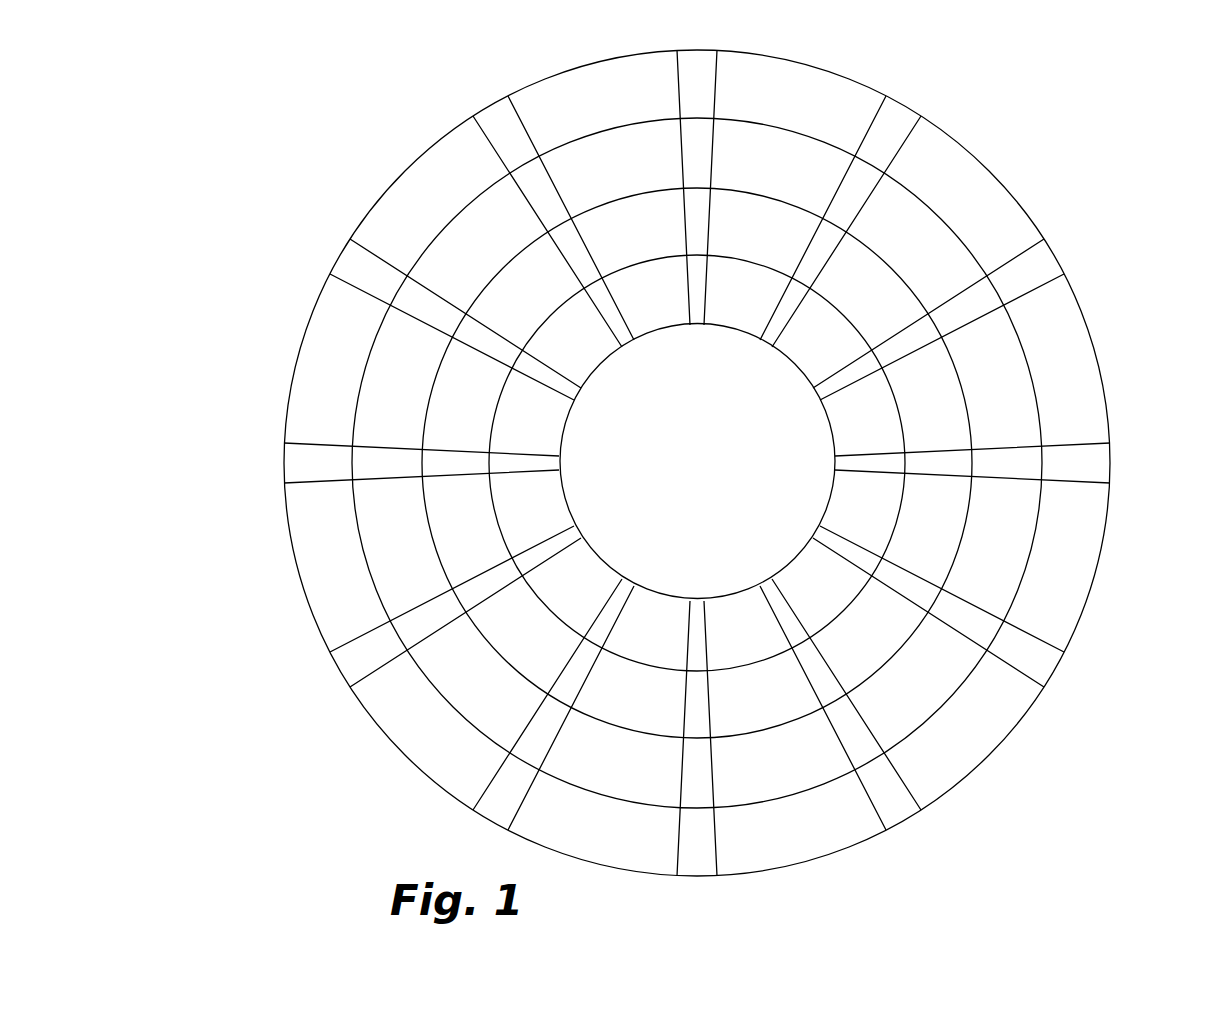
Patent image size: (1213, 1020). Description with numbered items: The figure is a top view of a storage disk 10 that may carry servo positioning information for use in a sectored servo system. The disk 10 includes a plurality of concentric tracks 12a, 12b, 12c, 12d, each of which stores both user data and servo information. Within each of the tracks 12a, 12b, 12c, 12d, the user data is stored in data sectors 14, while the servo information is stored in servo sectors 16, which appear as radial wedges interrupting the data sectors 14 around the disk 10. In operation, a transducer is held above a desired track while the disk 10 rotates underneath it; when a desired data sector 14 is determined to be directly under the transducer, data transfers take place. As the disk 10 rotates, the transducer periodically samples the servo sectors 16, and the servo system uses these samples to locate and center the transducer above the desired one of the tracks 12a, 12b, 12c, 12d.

The storage disk 10 is at (332, 120).
The concentric track 12a is at (335, 330).
The concentric track 12b is at (400, 358).
The concentric track 12c is at (463, 414).
The concentric track 12d is at (548, 420).
The data sector 14 is at (1135, 349).
The servo sector 16 is at (324, 678).